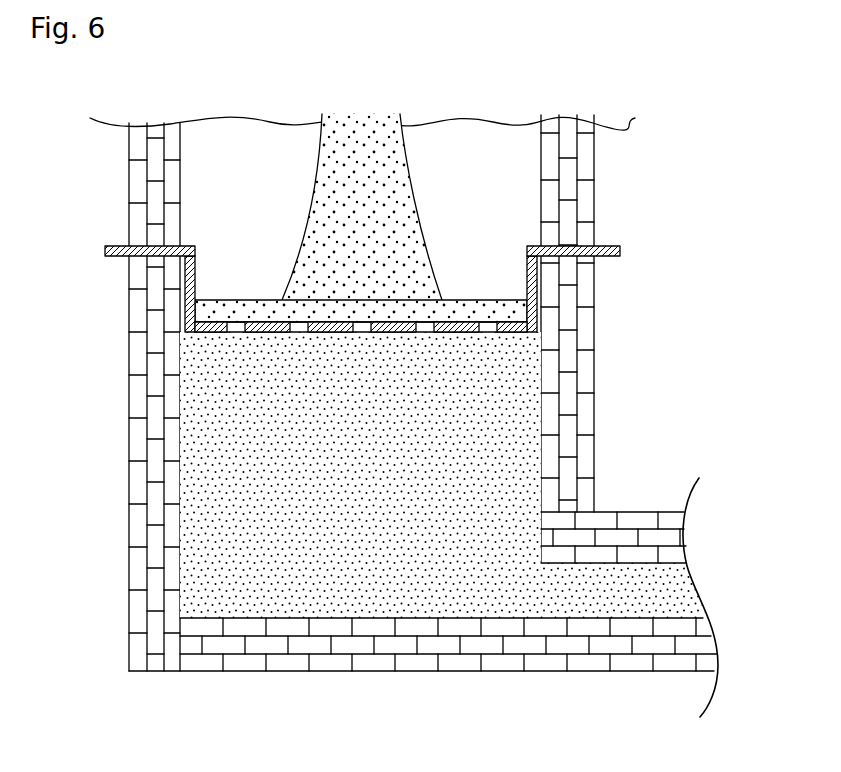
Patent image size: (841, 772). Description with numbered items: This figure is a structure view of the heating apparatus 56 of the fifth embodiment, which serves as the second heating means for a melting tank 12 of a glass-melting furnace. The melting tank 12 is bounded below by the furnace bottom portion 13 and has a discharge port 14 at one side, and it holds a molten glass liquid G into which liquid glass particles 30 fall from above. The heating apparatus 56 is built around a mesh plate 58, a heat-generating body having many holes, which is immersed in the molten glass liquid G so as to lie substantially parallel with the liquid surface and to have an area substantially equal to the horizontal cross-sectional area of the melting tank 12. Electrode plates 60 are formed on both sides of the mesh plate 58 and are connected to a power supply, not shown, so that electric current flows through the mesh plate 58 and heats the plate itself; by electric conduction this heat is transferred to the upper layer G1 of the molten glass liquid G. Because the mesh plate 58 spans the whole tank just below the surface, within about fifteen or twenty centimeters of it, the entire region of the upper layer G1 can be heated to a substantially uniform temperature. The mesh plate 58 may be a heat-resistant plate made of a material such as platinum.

The melting tank 12 is at (606, 166).
The furnace bottom portion 13 is at (398, 644).
The discharge port 14 is at (631, 521).
The liquid glass particles 30 is at (328, 200).
The heating apparatus 56 is at (457, 318).
The mesh plate 58 is at (263, 335).
The electrode plate 60 is at (109, 246).
The molten glass liquid G is at (313, 562).
The upper layer of the molten glass liquid G1 is at (402, 313).